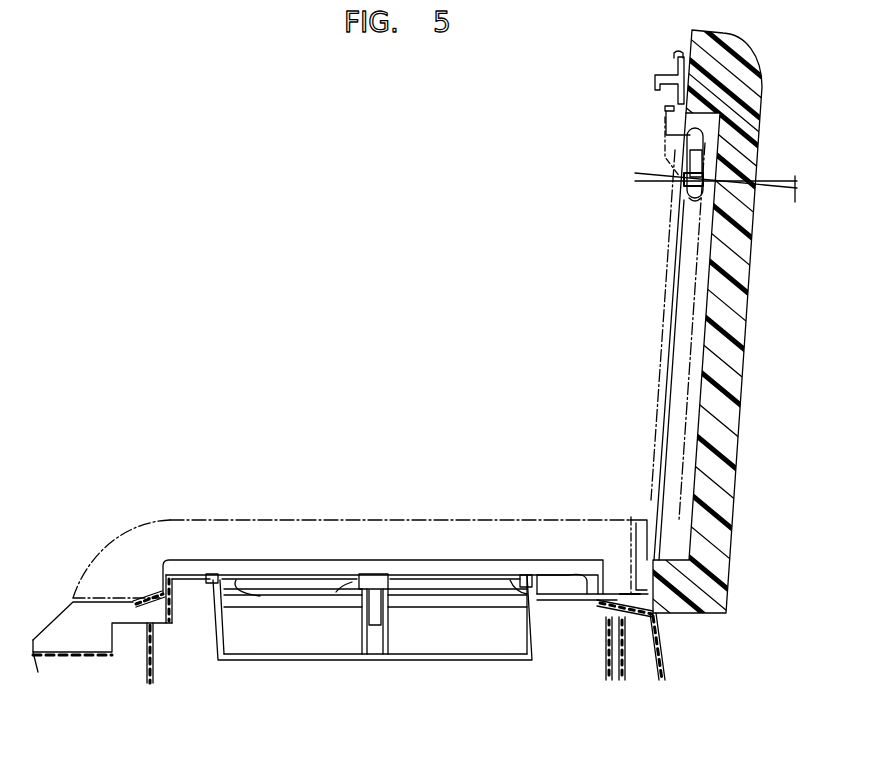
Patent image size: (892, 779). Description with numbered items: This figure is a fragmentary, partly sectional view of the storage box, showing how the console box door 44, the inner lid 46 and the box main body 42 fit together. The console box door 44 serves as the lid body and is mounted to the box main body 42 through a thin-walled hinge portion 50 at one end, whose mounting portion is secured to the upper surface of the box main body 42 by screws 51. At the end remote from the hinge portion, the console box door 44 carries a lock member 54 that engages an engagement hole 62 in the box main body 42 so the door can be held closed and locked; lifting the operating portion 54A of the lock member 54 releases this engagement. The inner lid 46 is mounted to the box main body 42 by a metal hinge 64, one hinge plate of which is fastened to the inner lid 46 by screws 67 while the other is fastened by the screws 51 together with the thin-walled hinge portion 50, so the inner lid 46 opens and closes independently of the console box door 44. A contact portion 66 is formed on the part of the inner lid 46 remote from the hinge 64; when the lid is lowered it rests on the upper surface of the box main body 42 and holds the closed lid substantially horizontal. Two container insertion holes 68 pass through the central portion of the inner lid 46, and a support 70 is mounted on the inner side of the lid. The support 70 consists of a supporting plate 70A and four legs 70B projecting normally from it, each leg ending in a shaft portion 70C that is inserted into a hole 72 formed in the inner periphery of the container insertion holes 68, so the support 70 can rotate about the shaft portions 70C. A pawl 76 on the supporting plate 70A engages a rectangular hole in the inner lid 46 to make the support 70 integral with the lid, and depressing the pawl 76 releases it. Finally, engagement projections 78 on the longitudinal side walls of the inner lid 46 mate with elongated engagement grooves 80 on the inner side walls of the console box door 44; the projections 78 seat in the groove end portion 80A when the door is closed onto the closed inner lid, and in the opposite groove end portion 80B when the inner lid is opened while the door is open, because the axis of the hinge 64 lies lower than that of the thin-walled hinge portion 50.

The box main body 42 is at (665, 664).
The console box door 44 is at (725, 562).
The inner lid 46 is at (183, 572).
The thin-walled hinge portion 50 is at (606, 672).
The screws 51 is at (634, 590).
The lock member 54 is at (655, 78).
The operating portion 54A is at (674, 54).
The engagement hole 62 is at (125, 624).
The hinge 64 is at (585, 620).
The contact portion 66 is at (150, 614).
The screws 67 is at (560, 612).
The container insertion holes 68 is at (243, 578).
The support 70 is at (336, 668).
The supporting plate 70A is at (432, 661).
The legs 70B is at (226, 628).
The shaft portions 70C is at (352, 588).
The holes 72 is at (213, 574).
The pawl 76 is at (382, 638).
The engagement projections 78 is at (682, 187).
The engagement grooves 80 is at (687, 160).
The groove end portion 80A is at (665, 110).
The groove end portion 80B is at (691, 200).